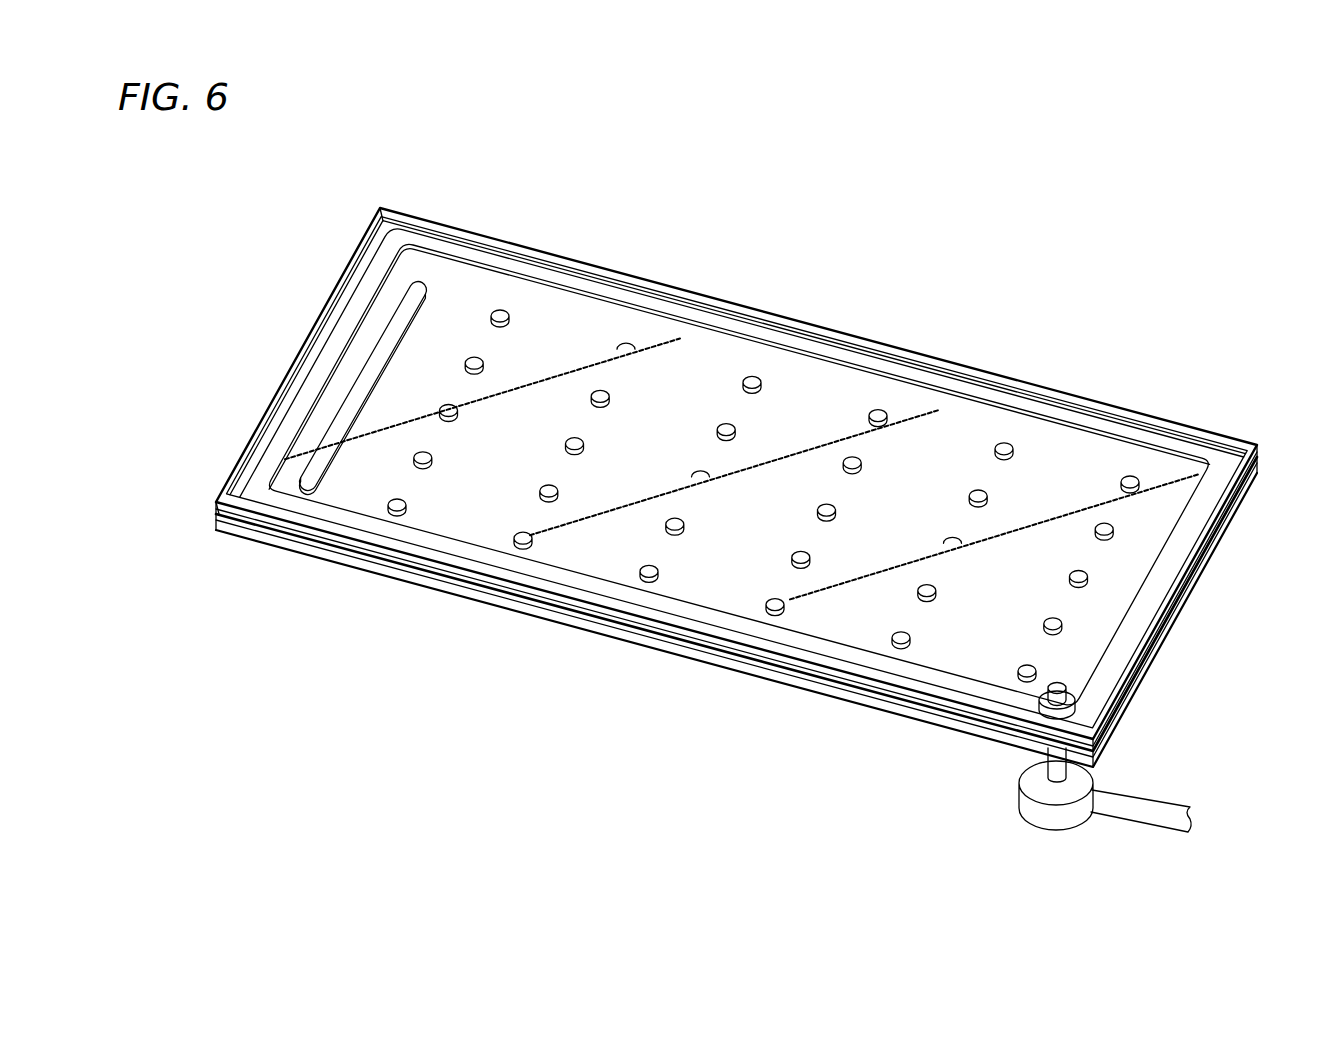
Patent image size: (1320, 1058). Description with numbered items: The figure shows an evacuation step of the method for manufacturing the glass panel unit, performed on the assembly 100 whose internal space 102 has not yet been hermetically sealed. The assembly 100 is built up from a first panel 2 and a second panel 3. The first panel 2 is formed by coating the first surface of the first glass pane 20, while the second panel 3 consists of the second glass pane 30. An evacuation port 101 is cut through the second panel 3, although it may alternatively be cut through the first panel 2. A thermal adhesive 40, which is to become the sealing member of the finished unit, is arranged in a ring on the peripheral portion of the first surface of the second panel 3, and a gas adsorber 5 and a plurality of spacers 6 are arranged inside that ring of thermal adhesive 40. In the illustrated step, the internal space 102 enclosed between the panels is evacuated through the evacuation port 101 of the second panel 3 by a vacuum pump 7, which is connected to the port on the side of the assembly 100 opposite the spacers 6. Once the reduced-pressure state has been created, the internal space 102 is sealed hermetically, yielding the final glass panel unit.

The assembly 100 is at (663, 280).
The first panel 2 is at (1222, 437).
The second panel 3 is at (1237, 518).
The first glass pane 20 is at (1140, 410).
The second glass pane 30 is at (1182, 609).
The thermal adhesive 40 is at (610, 601).
The gas adsorber 5 is at (367, 374).
The spacers 6 is at (402, 505).
The vacuum pump 7 is at (1048, 818).
The evacuation port 101 is at (1067, 685).
The internal space 102 is at (972, 446).